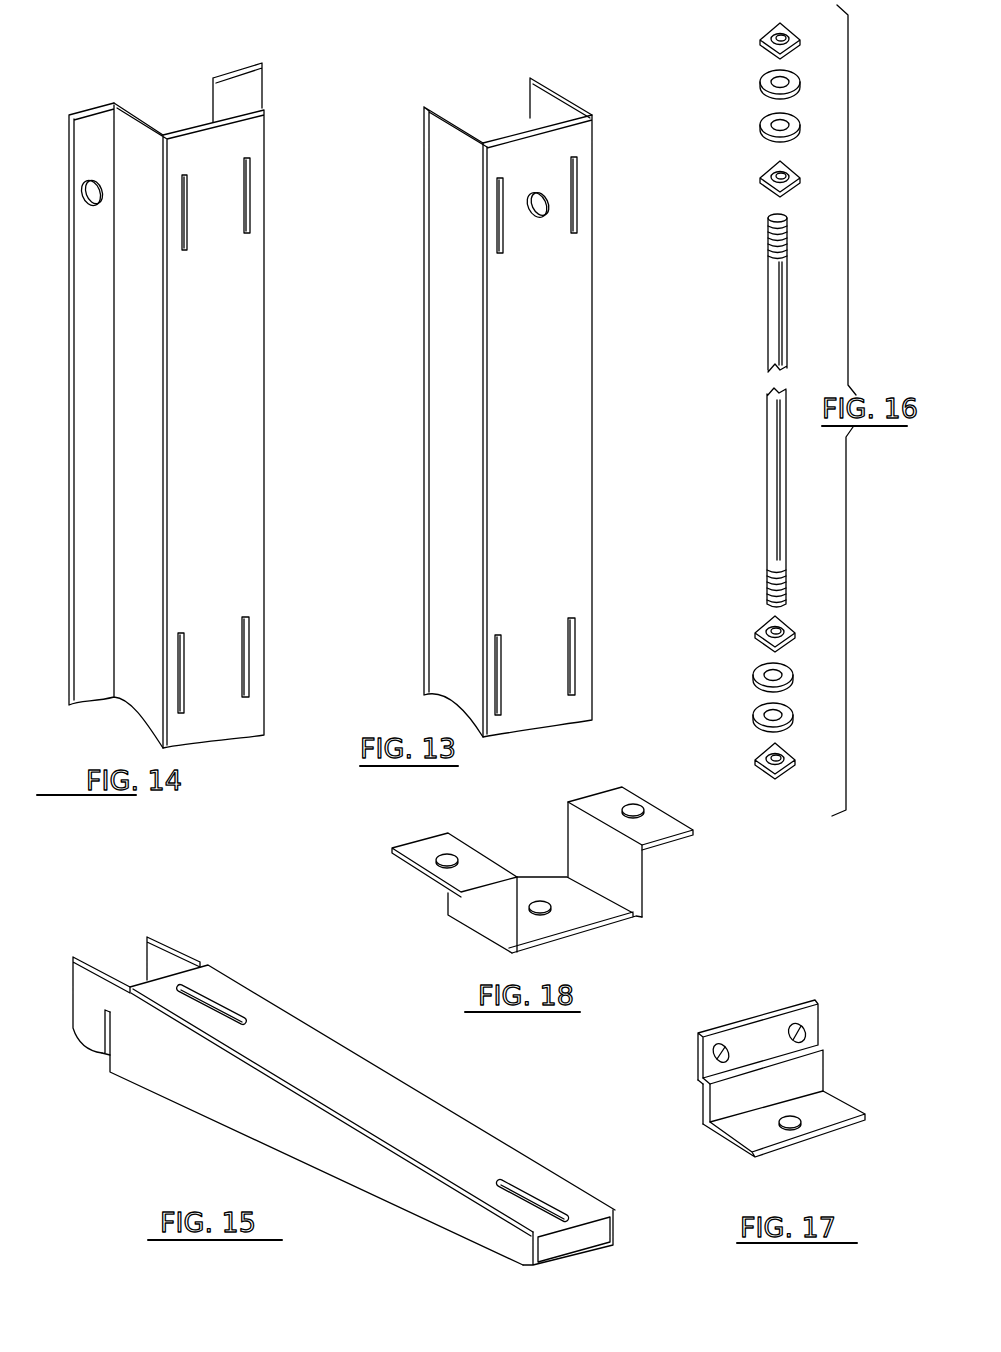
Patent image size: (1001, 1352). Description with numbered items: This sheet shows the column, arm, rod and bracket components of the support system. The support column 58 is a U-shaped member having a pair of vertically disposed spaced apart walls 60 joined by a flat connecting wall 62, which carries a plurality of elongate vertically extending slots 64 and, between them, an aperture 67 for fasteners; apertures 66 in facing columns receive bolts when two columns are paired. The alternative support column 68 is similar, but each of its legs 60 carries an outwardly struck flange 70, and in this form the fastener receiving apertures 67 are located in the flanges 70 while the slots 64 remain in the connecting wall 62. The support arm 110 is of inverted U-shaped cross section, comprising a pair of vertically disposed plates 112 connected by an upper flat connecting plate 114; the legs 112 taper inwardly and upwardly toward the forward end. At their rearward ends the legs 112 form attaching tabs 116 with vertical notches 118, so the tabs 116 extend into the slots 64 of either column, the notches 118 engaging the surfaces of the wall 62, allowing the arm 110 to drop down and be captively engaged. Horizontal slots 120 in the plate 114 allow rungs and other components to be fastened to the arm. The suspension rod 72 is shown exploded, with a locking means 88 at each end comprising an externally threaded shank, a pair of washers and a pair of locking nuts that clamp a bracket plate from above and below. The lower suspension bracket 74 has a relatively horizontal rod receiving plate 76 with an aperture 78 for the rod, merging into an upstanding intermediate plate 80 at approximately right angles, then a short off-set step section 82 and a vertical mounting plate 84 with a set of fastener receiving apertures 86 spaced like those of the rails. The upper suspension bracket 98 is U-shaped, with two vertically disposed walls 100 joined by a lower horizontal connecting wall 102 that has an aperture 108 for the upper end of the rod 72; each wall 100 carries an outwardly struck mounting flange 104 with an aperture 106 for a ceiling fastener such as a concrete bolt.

In FIG. 13, the support column 58 is at (470, 75).
In FIG. 14, the vertically disposed spaced apart walls 60 is at (222, 103).
In FIG. 13, the vertically disposed spaced apart walls 60 is at (547, 100).
In FIG. 14, the flat connecting wall 62 is at (253, 323).
In FIG. 13, the flat connecting wall 62 is at (575, 378).
In FIG. 14, the elongate vertically extending slots 64 is at (245, 218).
In FIG. 13, the elongate vertically extending slots 64 is at (575, 222).
In FIG. 13, the apertures 66 is at (537, 217).
In FIG. 14, the apertures 67 is at (100, 197).
In FIG. 14, the support column 68 is at (150, 75).
In FIG. 14, the outwardly struck flanges 70 is at (250, 87).
In FIG. 16, the suspension rod 72 is at (745, 378).
In FIG. 17, the suspension bracket 74 is at (787, 985).
In FIG. 17, the rod receiving plate 76 is at (742, 1133).
In FIG. 17, the aperture 78 is at (790, 1122).
In FIG. 17, the intermediate plate 80 is at (808, 1074).
In FIG. 17, the off-set step section 82 is at (727, 1075).
In FIG. 17, the mounting plate 84 is at (765, 1035).
In FIG. 17, the fastener receiving apertures 86 is at (805, 1033).
In FIG. 16, the locking means 88 is at (808, 625).
In FIG. 18, the upper suspension bracket 98 is at (664, 872).
In FIG. 18, the vertically disposed walls 100 is at (480, 918).
In FIG. 18, the lower horizontal connecting wall 102 is at (600, 933).
In FIG. 18, the outwardly struck mounting flanges 104 is at (412, 850).
In FIG. 18, the aperture 106 is at (447, 855).
In FIG. 18, the aperture 108 is at (540, 902).
In FIG. 15, the support arm 110 is at (250, 965).
In FIG. 15, the vertically disposed plates 112 is at (598, 1233).
In FIG. 15, the upper flat connecting plate 114 is at (358, 1070).
In FIG. 15, the attaching tabs 116 is at (150, 955).
In FIG. 15, the notches 118 is at (108, 1030).
In FIG. 15, the horizontal slots 120 is at (238, 1018).